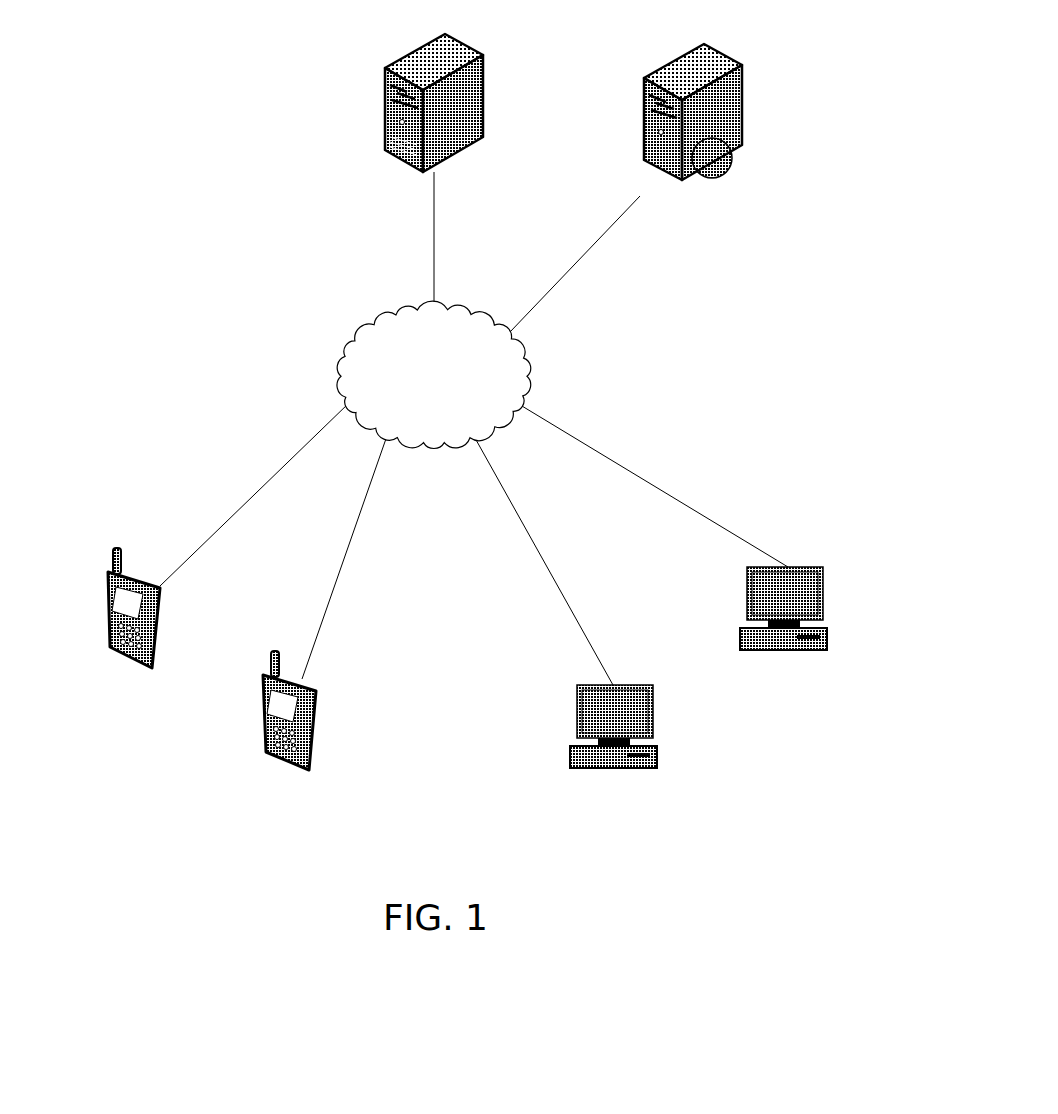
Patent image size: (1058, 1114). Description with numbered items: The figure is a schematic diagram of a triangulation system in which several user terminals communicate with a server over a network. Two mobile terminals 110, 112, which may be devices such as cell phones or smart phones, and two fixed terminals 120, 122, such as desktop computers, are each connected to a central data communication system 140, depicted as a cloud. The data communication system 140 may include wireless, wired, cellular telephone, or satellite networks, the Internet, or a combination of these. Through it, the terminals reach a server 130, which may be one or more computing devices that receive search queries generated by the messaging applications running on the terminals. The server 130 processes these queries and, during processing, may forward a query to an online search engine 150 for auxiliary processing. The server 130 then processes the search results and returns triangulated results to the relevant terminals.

The mobile terminal 110 is at (103, 588).
The mobile terminal 112 is at (262, 691).
The fixed terminal 120 is at (570, 760).
The fixed terminal 122 is at (740, 640).
The server 130 is at (410, 50).
The data communication system 140 is at (375, 322).
The online search engine 150 is at (642, 96).